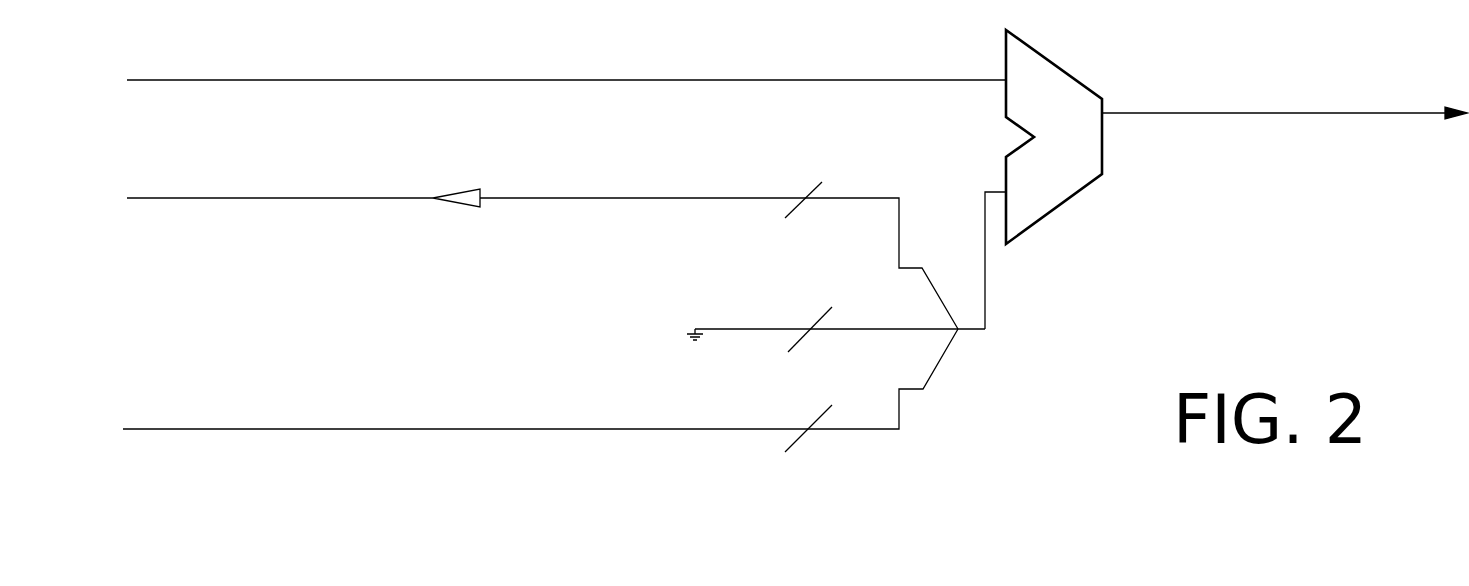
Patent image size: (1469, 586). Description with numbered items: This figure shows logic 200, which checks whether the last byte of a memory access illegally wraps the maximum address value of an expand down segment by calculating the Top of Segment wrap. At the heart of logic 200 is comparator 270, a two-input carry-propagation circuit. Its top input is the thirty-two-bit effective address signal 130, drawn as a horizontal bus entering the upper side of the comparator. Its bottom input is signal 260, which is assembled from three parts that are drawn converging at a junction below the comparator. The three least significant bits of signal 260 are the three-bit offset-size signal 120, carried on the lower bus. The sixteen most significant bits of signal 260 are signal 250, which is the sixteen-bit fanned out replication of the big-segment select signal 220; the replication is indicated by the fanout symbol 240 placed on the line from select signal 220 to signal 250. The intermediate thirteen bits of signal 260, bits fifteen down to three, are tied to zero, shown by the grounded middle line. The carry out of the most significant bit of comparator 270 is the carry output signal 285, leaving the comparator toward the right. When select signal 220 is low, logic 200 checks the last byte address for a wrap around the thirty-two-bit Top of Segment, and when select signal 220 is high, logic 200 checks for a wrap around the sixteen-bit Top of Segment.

The OSZM1_1 2..0 120 is at (315, 429).
The EFFADDR_1 31..0 130 is at (492, 80).
The logic 200 is at (628, 487).
The DC_BIG_1* 220 is at (195, 198).
The fanout symbol 240 is at (467, 207).
The signal 250 is at (680, 198).
The signal 260 is at (968, 330).
The comparator 270 is at (1084, 193).
The CARRY_OUT_31_1 285 is at (1350, 113).